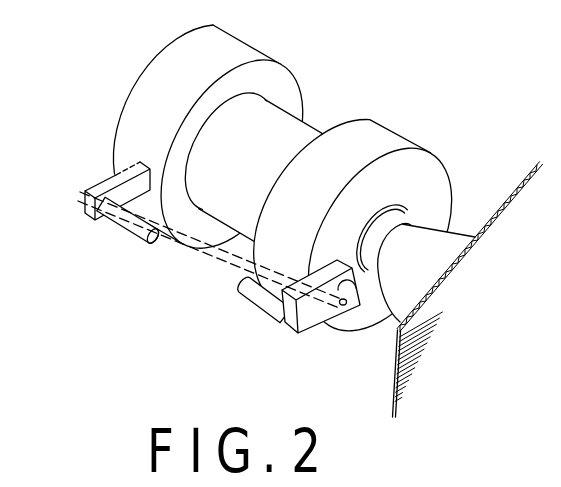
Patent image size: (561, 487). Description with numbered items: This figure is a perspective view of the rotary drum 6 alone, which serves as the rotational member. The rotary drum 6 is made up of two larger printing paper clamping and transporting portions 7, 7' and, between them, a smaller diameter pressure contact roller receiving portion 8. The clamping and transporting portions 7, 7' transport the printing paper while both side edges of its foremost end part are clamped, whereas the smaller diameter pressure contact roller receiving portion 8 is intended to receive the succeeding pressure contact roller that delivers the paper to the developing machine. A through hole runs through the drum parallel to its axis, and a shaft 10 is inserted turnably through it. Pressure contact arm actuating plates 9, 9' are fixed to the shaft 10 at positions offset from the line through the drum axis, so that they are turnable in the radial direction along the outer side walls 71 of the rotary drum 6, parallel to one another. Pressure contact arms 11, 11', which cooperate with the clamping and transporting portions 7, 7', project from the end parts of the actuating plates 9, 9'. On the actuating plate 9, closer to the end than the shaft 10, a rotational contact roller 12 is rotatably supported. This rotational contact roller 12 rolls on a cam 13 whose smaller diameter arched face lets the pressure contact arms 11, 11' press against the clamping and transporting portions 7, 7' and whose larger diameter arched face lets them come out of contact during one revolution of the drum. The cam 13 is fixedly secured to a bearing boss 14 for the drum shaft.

The rotary drum 6 is at (331, 52).
The printing paper clamping and transporting portion 7' is at (204, 130).
The printing paper clamping and transporting portion 7 is at (352, 205).
The outer side wall 71 is at (427, 162).
The pressure contact roller receiving portion 8 is at (303, 131).
The pressure contact arm actuating plate 9 is at (321, 315).
The pressure contact arm actuating plate 9' is at (93, 191).
The shaft 10 is at (237, 235).
The pressure contact arm 11 is at (259, 314).
The pressure contact arm 11' is at (129, 248).
The rotational contact roller 12 is at (348, 300).
The cam 13 is at (405, 217).
The bearing boss 14 is at (437, 253).